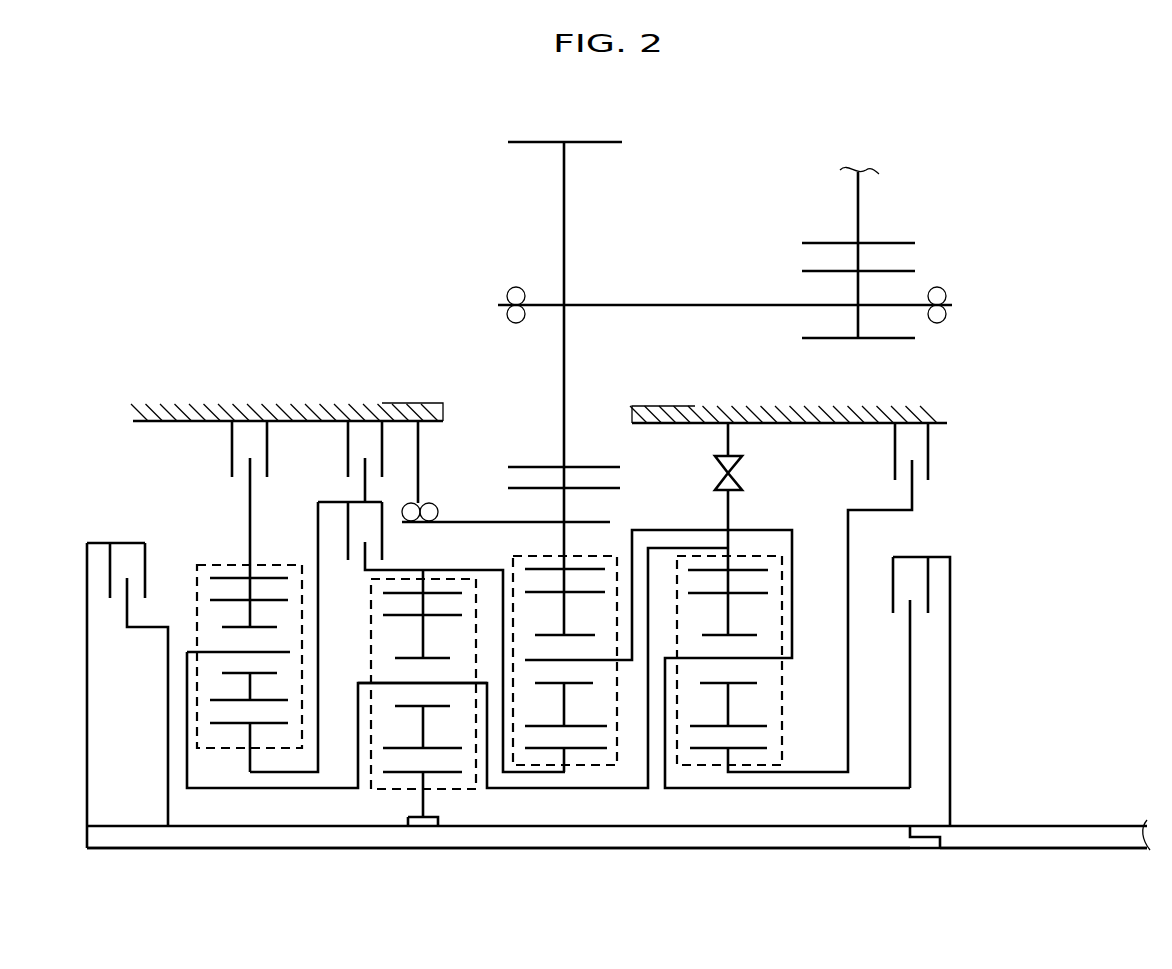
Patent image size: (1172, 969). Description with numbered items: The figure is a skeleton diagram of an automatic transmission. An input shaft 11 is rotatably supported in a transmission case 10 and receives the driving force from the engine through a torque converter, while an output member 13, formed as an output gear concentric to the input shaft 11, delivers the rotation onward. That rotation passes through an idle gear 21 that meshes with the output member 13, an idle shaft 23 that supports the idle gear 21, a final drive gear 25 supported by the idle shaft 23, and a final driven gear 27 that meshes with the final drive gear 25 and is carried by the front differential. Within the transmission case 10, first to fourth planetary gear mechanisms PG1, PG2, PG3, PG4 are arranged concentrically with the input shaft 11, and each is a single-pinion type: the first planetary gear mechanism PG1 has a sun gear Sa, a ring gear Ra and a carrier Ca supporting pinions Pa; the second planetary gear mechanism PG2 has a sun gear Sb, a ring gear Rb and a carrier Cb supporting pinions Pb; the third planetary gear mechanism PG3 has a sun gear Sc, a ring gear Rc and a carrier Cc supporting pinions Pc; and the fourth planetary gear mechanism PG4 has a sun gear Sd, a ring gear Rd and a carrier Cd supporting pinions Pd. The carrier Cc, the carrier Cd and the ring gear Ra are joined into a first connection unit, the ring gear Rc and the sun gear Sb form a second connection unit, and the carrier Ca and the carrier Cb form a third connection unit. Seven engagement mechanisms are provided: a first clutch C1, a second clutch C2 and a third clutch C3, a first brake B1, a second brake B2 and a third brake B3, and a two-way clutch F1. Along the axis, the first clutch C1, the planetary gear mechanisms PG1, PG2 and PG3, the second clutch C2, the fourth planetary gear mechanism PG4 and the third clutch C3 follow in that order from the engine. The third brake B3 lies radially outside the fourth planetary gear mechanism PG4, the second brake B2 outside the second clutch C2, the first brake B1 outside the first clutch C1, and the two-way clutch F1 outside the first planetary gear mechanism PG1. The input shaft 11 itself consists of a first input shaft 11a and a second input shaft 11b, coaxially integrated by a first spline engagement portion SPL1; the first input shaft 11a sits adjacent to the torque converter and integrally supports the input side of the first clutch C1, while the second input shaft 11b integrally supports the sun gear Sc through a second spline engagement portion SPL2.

The transmission case 10 is at (211, 404).
The input shaft 11 is at (1062, 791).
The first input shaft 11a is at (1054, 838).
The second input shaft 11b is at (252, 838).
The output member 13 is at (615, 487).
The idle gear 21 is at (541, 140).
The idle shaft 23 is at (690, 303).
The final drive gear 25 is at (812, 268).
The final driven gear 27 is at (893, 252).
The first planetary gear mechanism PG1 is at (712, 786).
The second planetary gear mechanism PG2 is at (535, 786).
The third planetary gear mechanism PG3 is at (392, 800).
The fourth planetary gear mechanism PG4 is at (260, 560).
The ring gear Ra is at (745, 568).
The ring gear Rb is at (583, 568).
The ring gear Rc is at (400, 593).
The ring gear Rd is at (270, 578).
The carrier Ca is at (775, 660).
The carrier Cb is at (595, 661).
The carrier Cc is at (462, 682).
The carrier Cd is at (228, 652).
The pinions Pa is at (767, 727).
The pinions Pb is at (597, 727).
The pinions Pc is at (432, 748).
The pinions Pd is at (228, 700).
The sun gear Sa is at (746, 752).
The sun gear Sb is at (587, 752).
The sun gear Sc is at (448, 780).
The sun gear Sd is at (228, 725).
The first clutch C1 is at (921, 691).
The second clutch C2 is at (407, 615).
The third clutch C3 is at (127, 695).
The first brake B1 is at (911, 451).
The second brake B2 is at (365, 449).
The third brake B3 is at (249, 449).
The two-way clutch F1 is at (748, 473).
The first spline engagement portion SPL1 is at (924, 838).
The second spline engagement portion SPL2 is at (420, 836).